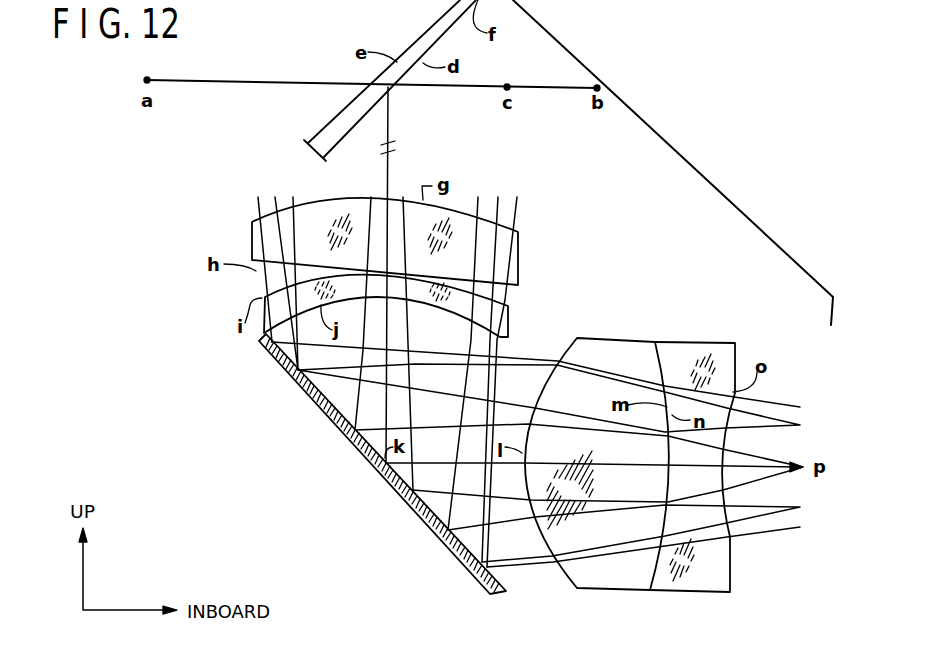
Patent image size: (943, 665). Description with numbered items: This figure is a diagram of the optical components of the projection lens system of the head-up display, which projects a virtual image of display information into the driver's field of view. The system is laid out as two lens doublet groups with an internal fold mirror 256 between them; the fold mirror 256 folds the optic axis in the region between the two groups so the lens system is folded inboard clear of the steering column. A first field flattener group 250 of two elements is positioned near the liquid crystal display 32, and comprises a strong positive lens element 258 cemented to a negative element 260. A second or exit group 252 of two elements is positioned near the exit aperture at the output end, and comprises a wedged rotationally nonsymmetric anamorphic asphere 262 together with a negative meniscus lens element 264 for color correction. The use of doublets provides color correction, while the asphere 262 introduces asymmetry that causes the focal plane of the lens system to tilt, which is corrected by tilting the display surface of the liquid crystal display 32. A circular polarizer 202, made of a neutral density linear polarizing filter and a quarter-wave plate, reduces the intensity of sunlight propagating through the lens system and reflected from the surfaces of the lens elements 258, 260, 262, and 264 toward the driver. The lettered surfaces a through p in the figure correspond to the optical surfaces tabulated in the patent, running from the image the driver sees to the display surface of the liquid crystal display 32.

The circular polarizer 202 is at (346, 80).
The liquid crystal display 32 is at (673, 162).
The field flattener group 250 is at (630, 465).
The exit group 252 is at (381, 268).
The internal fold mirror 256 is at (380, 473).
The strong positive lens element 258 is at (612, 340).
The negative element 260 is at (693, 340).
The wedged rotationally nonsymmetric anamorphic asphere 262 is at (518, 255).
The negative meniscus lens element 264 is at (513, 322).